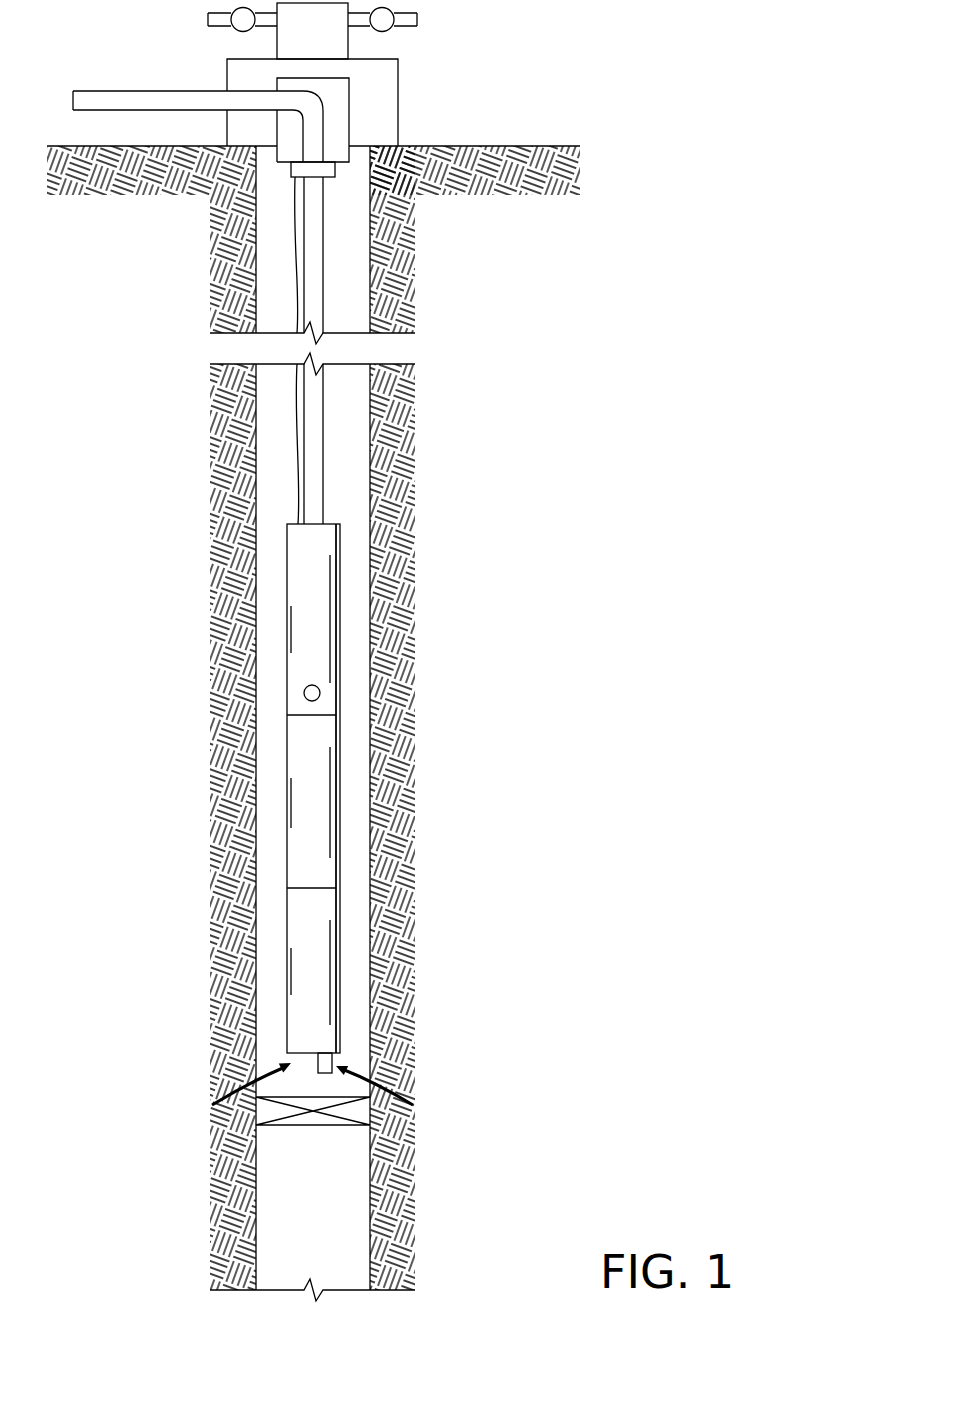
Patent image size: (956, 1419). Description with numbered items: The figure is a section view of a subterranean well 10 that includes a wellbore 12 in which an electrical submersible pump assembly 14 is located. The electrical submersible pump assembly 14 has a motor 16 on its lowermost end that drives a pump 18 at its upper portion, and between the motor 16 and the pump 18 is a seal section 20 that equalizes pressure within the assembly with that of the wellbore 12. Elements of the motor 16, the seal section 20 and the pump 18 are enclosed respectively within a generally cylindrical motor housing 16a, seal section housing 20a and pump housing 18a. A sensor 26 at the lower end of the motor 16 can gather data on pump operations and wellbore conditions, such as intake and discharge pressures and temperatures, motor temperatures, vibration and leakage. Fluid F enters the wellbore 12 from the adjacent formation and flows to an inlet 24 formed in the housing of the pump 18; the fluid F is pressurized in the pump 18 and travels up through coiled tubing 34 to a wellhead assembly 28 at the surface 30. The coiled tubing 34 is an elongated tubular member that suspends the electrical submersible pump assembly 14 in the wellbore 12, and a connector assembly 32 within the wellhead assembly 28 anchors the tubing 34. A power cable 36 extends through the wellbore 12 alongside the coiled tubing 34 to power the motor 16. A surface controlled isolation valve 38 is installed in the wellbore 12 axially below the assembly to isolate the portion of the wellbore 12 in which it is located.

The subterranean well 10 is at (103, 362).
The wellbore 12 is at (330, 1184).
The electrical submersible pump assembly 14 is at (278, 561).
The motor 16 is at (298, 1015).
The motor housing 16a is at (340, 972).
The pump 18 is at (297, 582).
The pump housing 18a is at (340, 620).
The seal section 20 is at (300, 857).
The seal section housing 20a is at (340, 790).
The inlet 24 is at (304, 693).
The sensor 26 is at (290, 1058).
The wellhead assembly 28 is at (436, 82).
The surface 30 is at (530, 146).
The connector assembly 32 is at (258, 78).
The coiled tubing 34 is at (323, 283).
The power cable 36 is at (290, 252).
The surface controlled isolation valve 38 is at (255, 1127).
The fluid F is at (365, 1075).